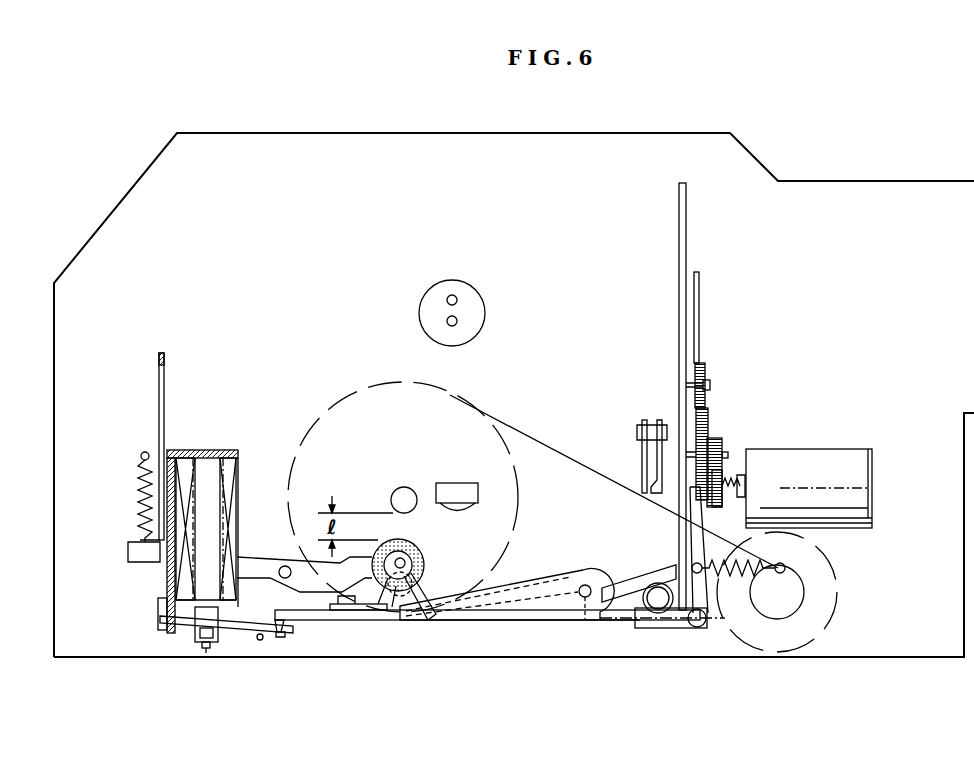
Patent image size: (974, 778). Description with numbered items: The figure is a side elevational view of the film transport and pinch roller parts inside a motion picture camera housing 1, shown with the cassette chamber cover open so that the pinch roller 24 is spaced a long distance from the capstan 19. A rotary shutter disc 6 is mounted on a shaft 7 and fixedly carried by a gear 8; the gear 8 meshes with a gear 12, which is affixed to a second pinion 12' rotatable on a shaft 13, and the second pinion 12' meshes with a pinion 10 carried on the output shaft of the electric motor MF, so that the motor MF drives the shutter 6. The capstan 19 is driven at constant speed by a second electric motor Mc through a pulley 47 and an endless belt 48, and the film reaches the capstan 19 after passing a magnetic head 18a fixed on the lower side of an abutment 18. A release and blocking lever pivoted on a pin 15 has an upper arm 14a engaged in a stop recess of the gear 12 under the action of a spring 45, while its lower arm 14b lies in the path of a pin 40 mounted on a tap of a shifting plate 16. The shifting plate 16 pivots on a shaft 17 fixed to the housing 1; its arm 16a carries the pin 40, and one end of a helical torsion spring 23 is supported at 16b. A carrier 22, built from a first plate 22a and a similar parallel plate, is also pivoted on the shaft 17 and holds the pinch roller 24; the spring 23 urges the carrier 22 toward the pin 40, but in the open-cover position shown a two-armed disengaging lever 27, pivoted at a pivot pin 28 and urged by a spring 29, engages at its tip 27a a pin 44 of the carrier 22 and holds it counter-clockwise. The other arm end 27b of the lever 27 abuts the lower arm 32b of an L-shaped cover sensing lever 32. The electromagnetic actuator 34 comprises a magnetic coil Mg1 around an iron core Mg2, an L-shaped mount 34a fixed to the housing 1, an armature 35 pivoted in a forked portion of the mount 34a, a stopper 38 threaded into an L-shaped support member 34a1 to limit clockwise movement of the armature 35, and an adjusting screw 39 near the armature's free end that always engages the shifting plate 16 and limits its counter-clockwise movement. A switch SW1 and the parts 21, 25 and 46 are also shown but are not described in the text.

The camera housing 1 is at (583, 205).
The rotary shutter disc 6 is at (699, 284).
The shaft 7 is at (711, 384).
The gear 8 is at (705, 369).
The pinion 10 is at (720, 496).
The gear 12 is at (727, 447).
The second pinion 12' is at (748, 453).
The shaft 13 is at (728, 455).
The upper arm 14a is at (692, 478).
The lower arm 14b is at (647, 629).
The pin 15 is at (697, 628).
The shifting plate 16 is at (320, 621).
The shifting plate arm 16a is at (615, 622).
The spring support point 16b is at (345, 611).
The shaft 17 is at (585, 598).
The abutment 18 is at (458, 483).
The magnetic head 18a is at (458, 514).
The capstan 19 is at (404, 487).
The release button 21 is at (481, 298).
The carrier 22 is at (530, 621).
The first framework plate 22a is at (670, 573).
The helical torsion spring 23 is at (350, 606).
The pinch roller 24 is at (410, 553).
The pin 25 is at (406, 567).
The two-armed disengaging lever 27 is at (251, 556).
The tip of disengaging lever 27a is at (386, 606).
The arm end of disengaging lever 27b is at (158, 563).
The pivot pin 28 is at (283, 567).
The spring 29 is at (142, 501).
The cover sensing lever 32 is at (165, 388).
The lower arm 32b is at (165, 358).
The electromagnetic actuator 34 is at (213, 446).
The L-shape mount 34a is at (238, 456).
The L-shape support member 34a1 is at (218, 632).
The armature 35 is at (256, 636).
The stopper 38 is at (205, 652).
The adjusting screw 39 is at (282, 637).
The pin 40 is at (655, 585).
The pin 44 is at (418, 602).
The spring 45 is at (701, 564).
The film cartridge outline 46 is at (452, 412).
The pulley 47 is at (778, 620).
The endless belt 48 is at (586, 465).
The switch SW1 is at (644, 420).
The magnetic coil Mg1 is at (186, 470).
The iron core Mg2 is at (220, 492).
The electric motor MF is at (792, 490).
The electric motor Mc is at (837, 594).